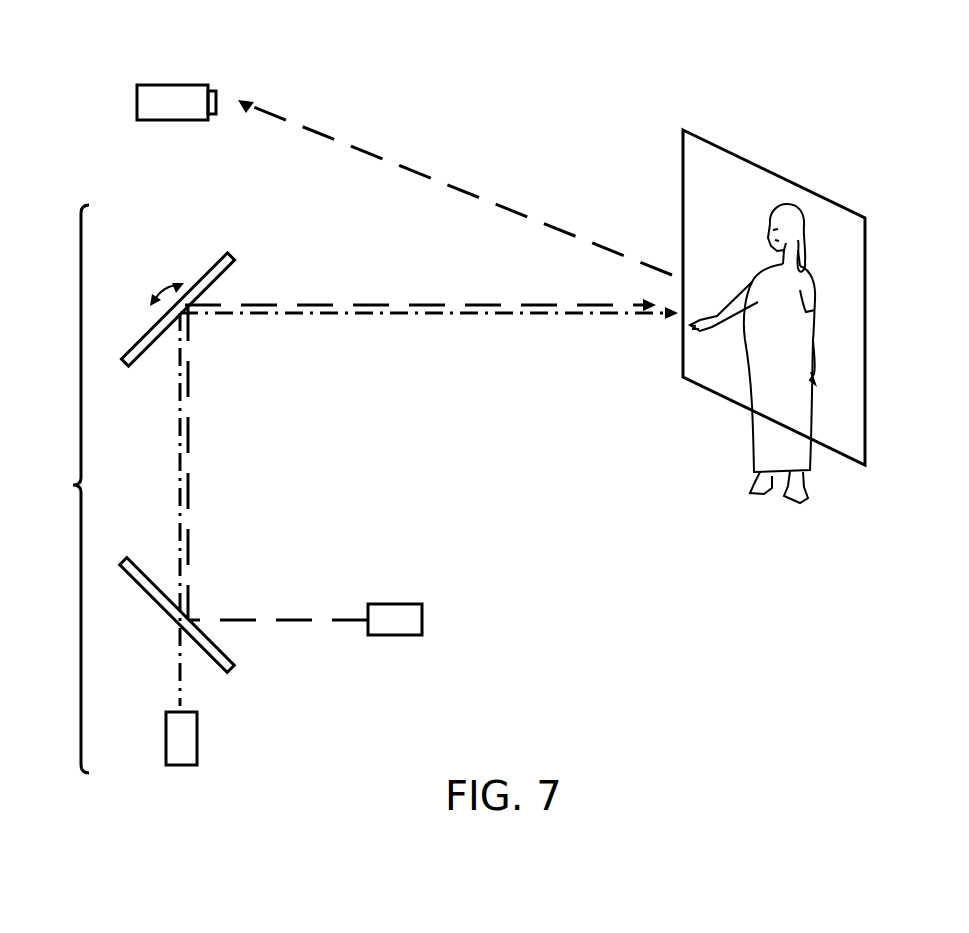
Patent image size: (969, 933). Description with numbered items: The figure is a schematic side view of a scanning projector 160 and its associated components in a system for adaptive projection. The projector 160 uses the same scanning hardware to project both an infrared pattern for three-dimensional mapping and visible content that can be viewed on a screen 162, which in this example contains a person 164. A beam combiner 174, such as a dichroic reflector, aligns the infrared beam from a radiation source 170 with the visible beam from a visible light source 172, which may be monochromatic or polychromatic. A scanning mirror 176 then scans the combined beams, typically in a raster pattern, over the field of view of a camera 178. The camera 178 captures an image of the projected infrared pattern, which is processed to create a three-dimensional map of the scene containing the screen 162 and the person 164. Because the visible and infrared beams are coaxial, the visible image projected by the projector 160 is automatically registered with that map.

The scanning projector 160 is at (57, 489).
The screen 162 is at (683, 165).
The person 164 is at (768, 246).
The radiation source 170 is at (197, 740).
The visible light source 172 is at (422, 612).
The beam combiner 174 is at (170, 617).
The scanning mirror 176 is at (236, 258).
The camera 178 is at (178, 85).